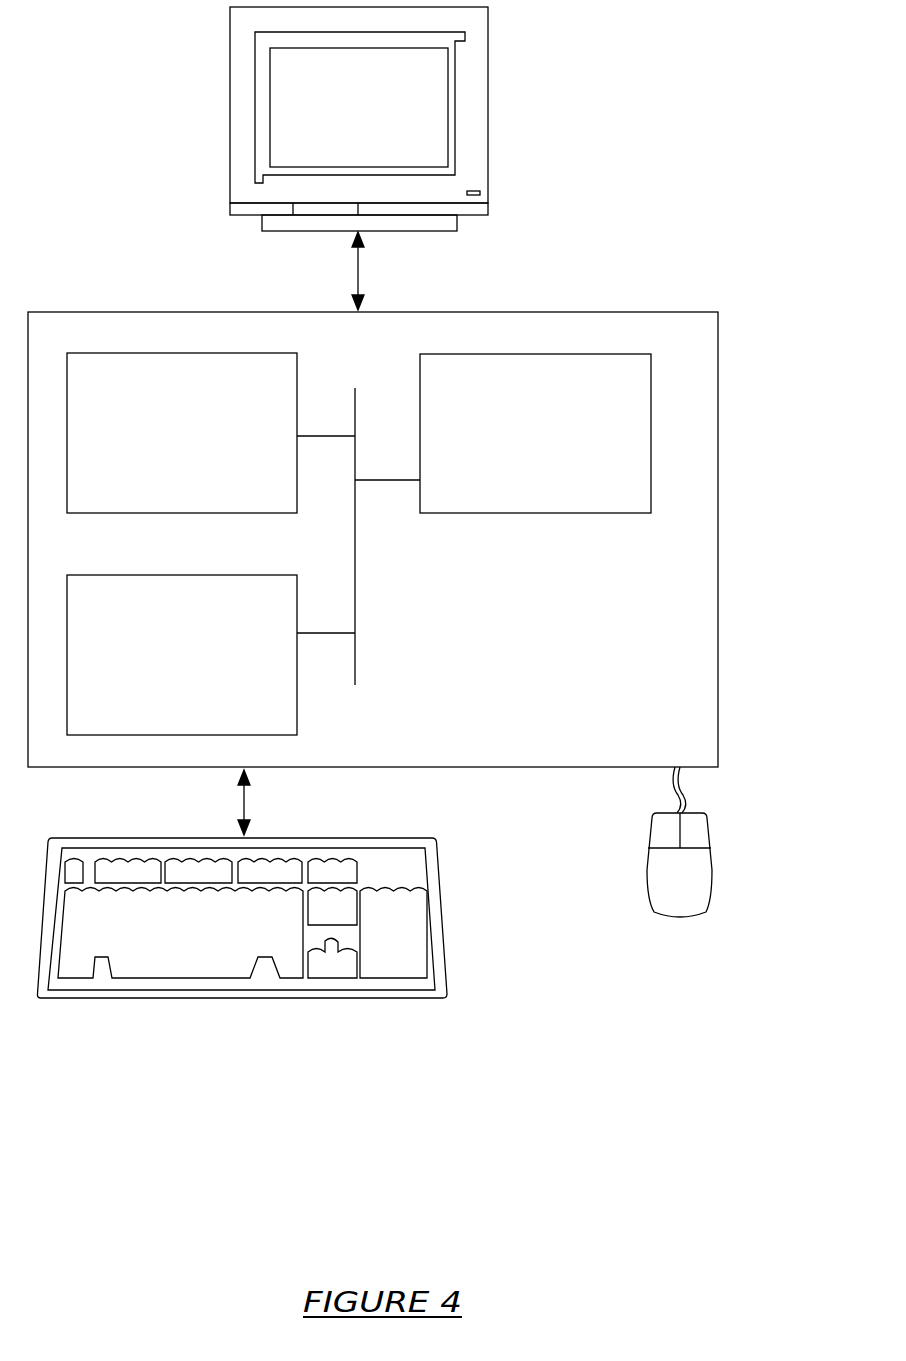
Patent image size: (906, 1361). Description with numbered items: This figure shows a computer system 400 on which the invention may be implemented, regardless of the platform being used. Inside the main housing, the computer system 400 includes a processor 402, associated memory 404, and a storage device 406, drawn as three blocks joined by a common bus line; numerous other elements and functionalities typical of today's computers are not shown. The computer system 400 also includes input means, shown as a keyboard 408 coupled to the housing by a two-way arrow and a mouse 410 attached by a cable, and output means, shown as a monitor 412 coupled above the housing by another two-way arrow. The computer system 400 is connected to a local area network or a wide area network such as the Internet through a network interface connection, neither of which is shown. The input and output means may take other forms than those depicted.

The computer system 400 is at (698, 176).
The processor 402 is at (530, 444).
The associated memory 404 is at (161, 444).
The storage device 406 is at (157, 667).
The keyboard 408 is at (151, 956).
The mouse 410 is at (658, 889).
The monitor 412 is at (336, 122).